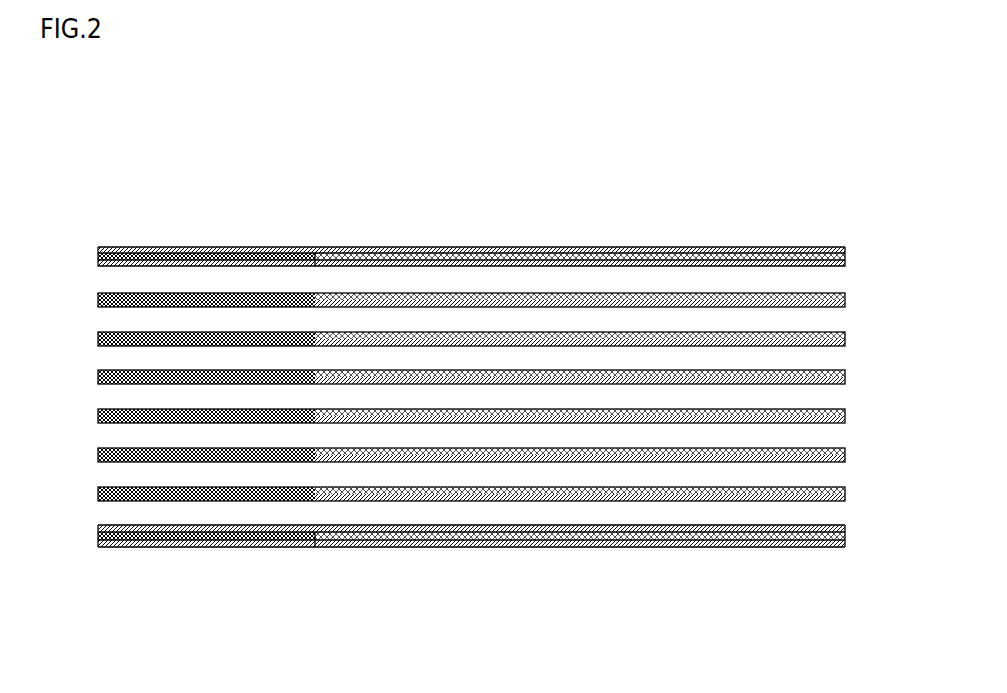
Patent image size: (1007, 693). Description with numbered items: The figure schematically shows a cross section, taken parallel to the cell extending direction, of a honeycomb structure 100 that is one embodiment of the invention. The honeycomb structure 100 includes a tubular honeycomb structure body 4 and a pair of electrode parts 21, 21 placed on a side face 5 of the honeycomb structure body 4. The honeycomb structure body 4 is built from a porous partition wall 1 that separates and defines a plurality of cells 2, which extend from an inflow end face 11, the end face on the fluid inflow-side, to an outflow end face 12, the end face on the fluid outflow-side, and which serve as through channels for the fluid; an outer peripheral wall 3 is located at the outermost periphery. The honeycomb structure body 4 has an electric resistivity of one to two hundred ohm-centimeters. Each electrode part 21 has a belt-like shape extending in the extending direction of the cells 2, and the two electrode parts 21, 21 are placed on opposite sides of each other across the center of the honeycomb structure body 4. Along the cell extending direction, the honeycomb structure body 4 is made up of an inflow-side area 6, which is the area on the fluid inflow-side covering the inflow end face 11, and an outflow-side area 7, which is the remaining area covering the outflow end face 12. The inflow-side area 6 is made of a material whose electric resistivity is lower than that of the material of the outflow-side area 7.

The honeycomb structure 100 is at (848, 133).
The partition wall 1 is at (432, 501).
The cells 2 is at (155, 319).
The outer peripheral wall 3 is at (582, 547).
The honeycomb structure body 4 is at (217, 249).
The side face 5 is at (690, 540).
The inflow-side area 6 is at (267, 248).
The outflow-side area 7 is at (535, 247).
The inflow end face 11 is at (95, 262).
The outflow end face 12 is at (845, 262).
The electrode part 21 is at (363, 246).